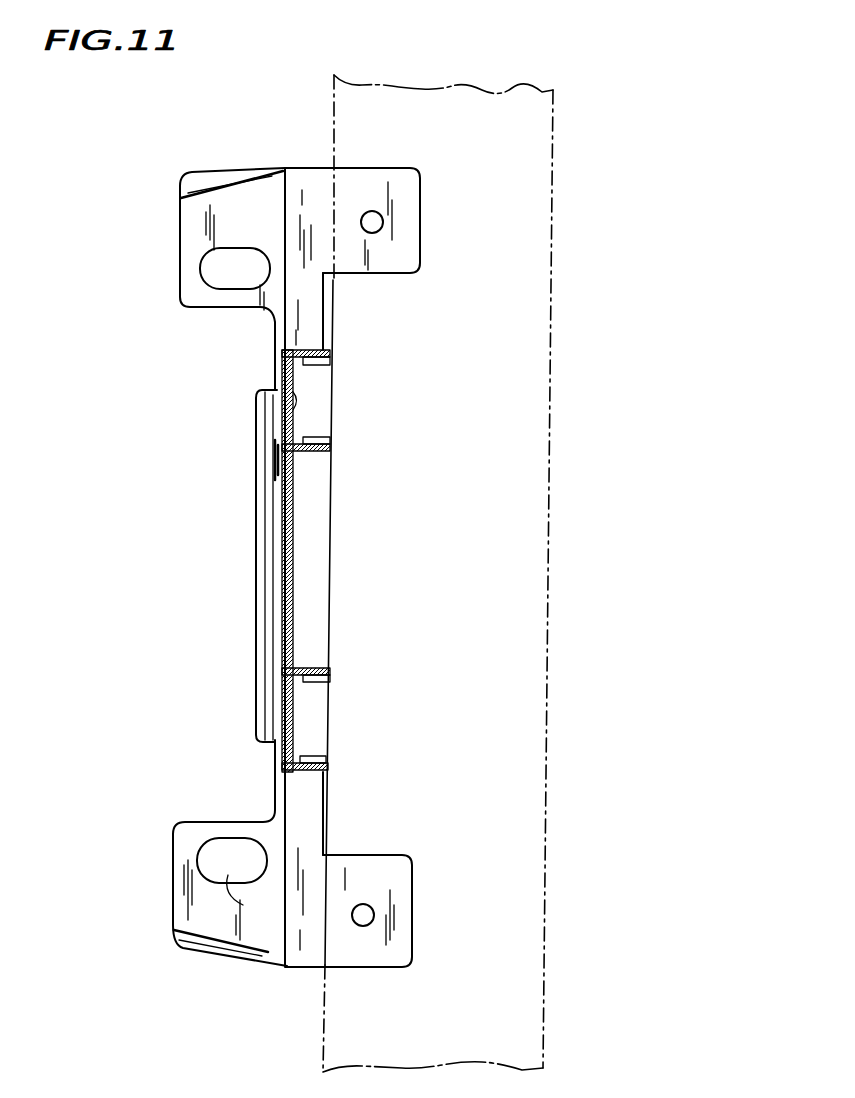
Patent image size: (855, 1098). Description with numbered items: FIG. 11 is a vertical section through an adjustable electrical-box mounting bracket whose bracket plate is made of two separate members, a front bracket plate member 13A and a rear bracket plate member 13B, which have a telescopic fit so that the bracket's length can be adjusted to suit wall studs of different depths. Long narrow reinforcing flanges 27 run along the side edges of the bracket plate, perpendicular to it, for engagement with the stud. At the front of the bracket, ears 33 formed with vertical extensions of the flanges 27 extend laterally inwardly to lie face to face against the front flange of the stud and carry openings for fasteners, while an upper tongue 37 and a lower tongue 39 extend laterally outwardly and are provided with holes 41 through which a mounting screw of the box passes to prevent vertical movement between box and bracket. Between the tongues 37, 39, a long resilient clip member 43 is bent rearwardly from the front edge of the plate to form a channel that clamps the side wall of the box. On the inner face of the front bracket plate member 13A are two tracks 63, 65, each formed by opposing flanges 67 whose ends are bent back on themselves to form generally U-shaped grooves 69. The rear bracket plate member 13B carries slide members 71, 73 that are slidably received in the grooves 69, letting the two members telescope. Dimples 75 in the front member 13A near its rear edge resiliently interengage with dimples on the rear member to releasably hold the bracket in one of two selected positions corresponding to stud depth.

The front bracket plate member 13A is at (283, 635).
The rear bracket plate member 13B is at (283, 420).
The reinforcing flanges 27 is at (311, 185).
The ears 33 is at (407, 192).
The upper tongue 37 is at (195, 224).
The lower tongue 39 is at (183, 912).
The holes 41 is at (228, 250).
The clip member 43 is at (256, 533).
The track 63 is at (328, 452).
The track 65 is at (313, 750).
The flanges 67 is at (318, 367).
The U-shaped grooves 69 is at (332, 358).
The slide members 71 is at (306, 370).
The slide members 73 is at (300, 672).
The dimples 75 is at (283, 392).